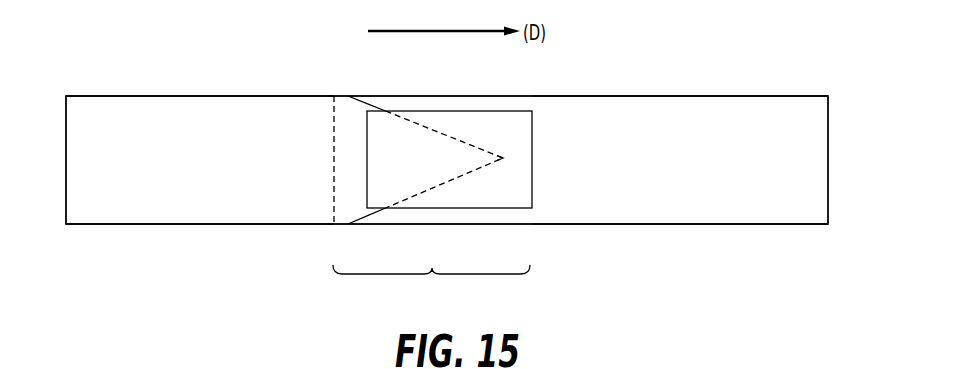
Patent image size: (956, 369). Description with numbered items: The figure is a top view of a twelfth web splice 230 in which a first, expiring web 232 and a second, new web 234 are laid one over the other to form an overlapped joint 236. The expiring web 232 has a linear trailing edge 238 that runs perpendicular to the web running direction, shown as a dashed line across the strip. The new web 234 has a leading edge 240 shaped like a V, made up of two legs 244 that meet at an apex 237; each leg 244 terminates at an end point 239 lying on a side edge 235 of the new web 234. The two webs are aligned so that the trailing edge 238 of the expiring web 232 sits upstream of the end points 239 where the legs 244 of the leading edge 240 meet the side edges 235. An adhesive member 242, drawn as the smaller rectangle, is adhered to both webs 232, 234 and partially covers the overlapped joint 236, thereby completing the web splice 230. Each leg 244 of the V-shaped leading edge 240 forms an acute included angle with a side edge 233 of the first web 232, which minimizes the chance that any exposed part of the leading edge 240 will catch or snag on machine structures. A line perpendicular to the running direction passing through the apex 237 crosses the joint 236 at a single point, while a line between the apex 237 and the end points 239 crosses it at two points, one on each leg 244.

The web splice 230 is at (120, 50).
The first, expiring web 232 is at (760, 215).
The side edge of the first web 233 is at (742, 96).
The second, new web 234 is at (135, 205).
The side edge of the new web 235 is at (208, 96).
The overlapped joint 236 is at (432, 200).
The apex 237 is at (503, 158).
The trailing edge 238 is at (334, 160).
The end point 239 is at (348, 96).
The leading edge 240 is at (446, 133).
The adhesive member 242 is at (493, 110).
The leg 244 is at (370, 103).